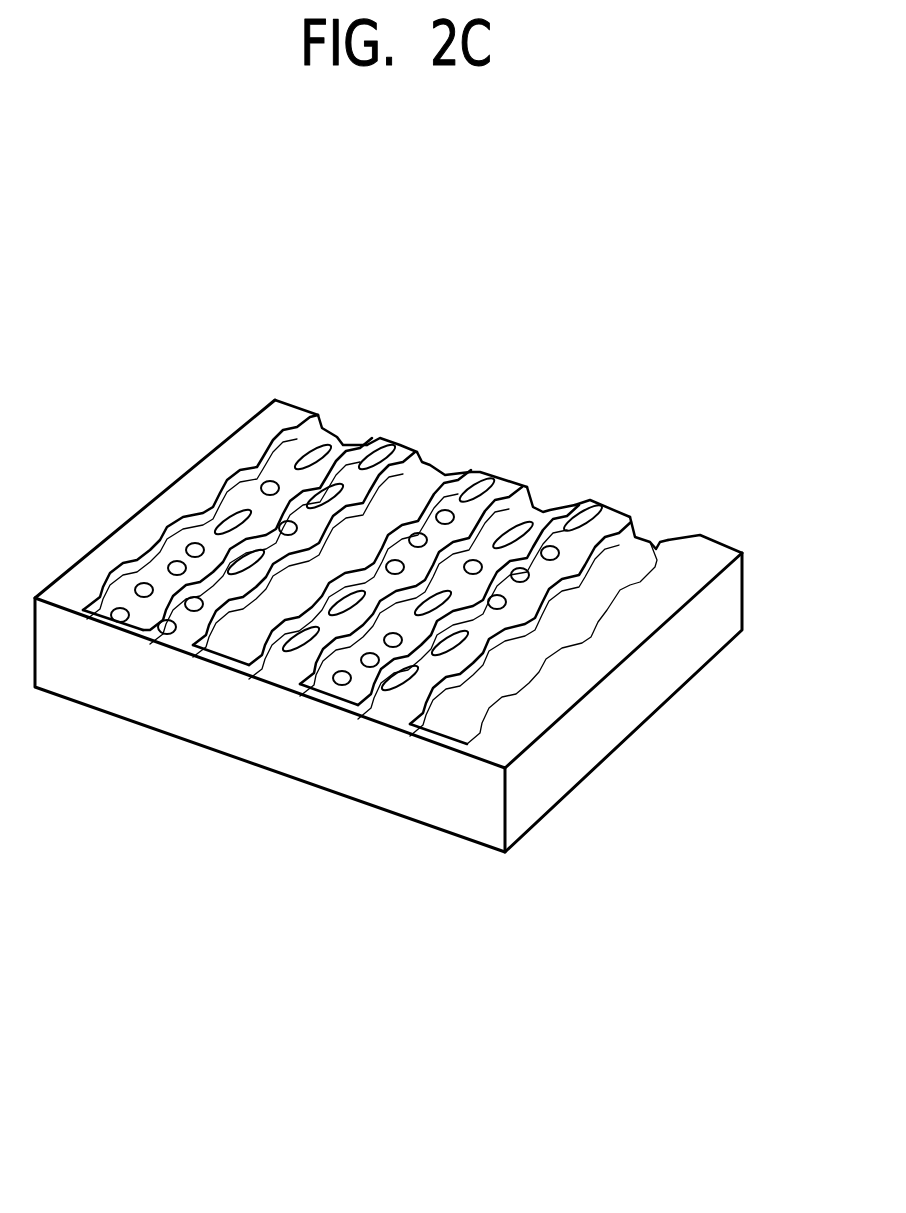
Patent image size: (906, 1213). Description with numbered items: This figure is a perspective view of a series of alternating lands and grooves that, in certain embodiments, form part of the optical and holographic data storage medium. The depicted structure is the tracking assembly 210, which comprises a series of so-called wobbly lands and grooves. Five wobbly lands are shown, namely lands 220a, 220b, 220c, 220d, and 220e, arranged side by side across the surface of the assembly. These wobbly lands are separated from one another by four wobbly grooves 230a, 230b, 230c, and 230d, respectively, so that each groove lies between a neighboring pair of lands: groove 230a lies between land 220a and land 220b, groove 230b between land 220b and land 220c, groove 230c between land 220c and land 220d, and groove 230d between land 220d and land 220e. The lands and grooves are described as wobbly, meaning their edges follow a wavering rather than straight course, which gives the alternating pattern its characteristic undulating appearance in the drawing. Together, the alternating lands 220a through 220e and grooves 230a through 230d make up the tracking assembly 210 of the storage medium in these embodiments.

The tracking assembly 210 is at (423, 863).
The land 220a is at (278, 400).
The land 220b is at (418, 450).
The land 220c is at (527, 503).
The land 220d is at (610, 502).
The land 220e is at (732, 543).
The groove 230a is at (337, 440).
The groove 230b is at (443, 470).
The groove 230c is at (543, 510).
The groove 230d is at (655, 545).